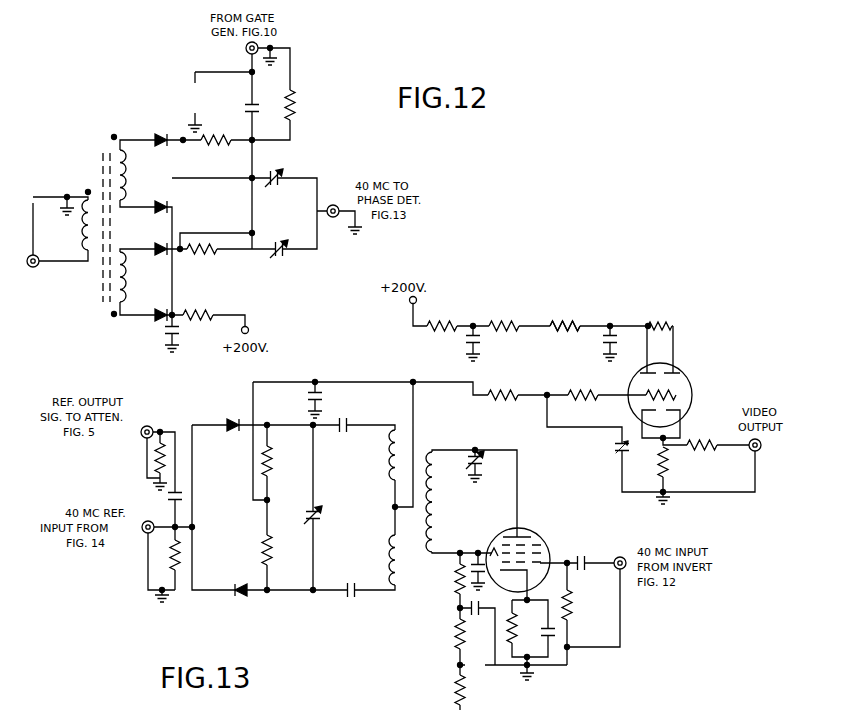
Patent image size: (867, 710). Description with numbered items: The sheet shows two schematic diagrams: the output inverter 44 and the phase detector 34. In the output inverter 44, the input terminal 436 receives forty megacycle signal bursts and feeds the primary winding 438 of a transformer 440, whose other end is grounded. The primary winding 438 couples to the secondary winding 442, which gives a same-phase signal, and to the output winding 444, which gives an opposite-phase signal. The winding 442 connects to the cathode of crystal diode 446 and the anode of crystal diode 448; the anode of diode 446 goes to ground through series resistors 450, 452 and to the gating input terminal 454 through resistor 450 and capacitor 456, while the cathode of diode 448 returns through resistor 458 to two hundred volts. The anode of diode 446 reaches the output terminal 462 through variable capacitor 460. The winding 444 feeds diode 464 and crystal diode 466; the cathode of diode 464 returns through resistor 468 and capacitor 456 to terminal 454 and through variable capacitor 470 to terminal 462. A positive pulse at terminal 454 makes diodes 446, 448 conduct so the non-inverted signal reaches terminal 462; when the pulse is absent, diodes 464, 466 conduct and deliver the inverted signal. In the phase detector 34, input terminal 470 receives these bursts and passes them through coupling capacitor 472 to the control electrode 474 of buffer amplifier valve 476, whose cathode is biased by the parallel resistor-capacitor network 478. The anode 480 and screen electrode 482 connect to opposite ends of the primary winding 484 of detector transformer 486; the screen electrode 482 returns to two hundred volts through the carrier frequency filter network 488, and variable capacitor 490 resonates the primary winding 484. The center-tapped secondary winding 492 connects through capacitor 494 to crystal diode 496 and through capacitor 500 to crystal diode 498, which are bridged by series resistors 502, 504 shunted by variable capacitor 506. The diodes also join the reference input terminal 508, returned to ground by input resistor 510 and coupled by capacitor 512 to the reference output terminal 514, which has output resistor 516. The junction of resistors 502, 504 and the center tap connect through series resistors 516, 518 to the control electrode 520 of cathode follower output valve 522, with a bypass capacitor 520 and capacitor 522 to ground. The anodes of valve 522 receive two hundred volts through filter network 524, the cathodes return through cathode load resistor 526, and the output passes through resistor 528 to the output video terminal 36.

In FIG. 12, the output inverter 44 is at (128, 104).
In FIG. 12, the transformer 440 is at (97, 171).
In FIG. 12, the primary winding 438 is at (84, 226).
In FIG. 12, the input terminal 436 is at (37, 268).
In FIG. 12, the secondary winding 444 is at (128, 176).
In FIG. 12, the secondary winding 442 is at (128, 278).
In FIG. 12, the diode 464 is at (161, 132).
In FIG. 12, the crystal diode 466 is at (169, 205).
In FIG. 12, the crystal diode 446 is at (157, 243).
In FIG. 12, the crystal diode 448 is at (168, 328).
In FIG. 12, the input terminal 454 is at (246, 48).
In FIG. 12, the capacitor 456 is at (256, 104).
In FIG. 12, the resistor 452 is at (293, 100).
In FIG. 12, the resistor 468 is at (206, 135).
In FIG. 12, the resistor 450 is at (196, 254).
In FIG. 12, the resistor 458 is at (200, 312).
In FIG. 12, the variable capacitor 470 is at (280, 187).
In FIG. 13, the variable capacitor 470 is at (618, 558).
In FIG. 12, the variable capacitor 460 is at (286, 258).
In FIG. 12, the output terminal 462 is at (333, 203).
In FIG. 13, the phase detector 34 is at (397, 365).
In FIG. 13, the detector transformer 486 is at (424, 620).
In FIG. 13, the reference output terminal 514 is at (140, 438).
In FIG. 13, the resistor 516 is at (176, 430).
In FIG. 13, the capacitor 512 is at (168, 501).
In FIG. 13, the input terminal 508 is at (143, 538).
In FIG. 13, the input resistor 510 is at (176, 580).
In FIG. 13, the crystal diode 498 is at (242, 598).
In FIG. 13, the crystal diode 496 is at (233, 417).
In FIG. 13, the control electrode 520 is at (306, 401).
In FIG. 13, the resistor 502 is at (271, 460).
In FIG. 13, the resistor 504 is at (272, 546).
In FIG. 13, the variable capacitor 506 is at (326, 519).
In FIG. 13, the capacitor 494 is at (352, 421).
In FIG. 13, the center-tapped secondary winding 492 is at (386, 470).
In FIG. 13, the capacitor 500 is at (355, 598).
In FIG. 13, the carrier frequency filter network 488 is at (456, 650).
In FIG. 13, the parallel resistor-capacitor network 478 is at (506, 612).
In FIG. 13, the primary winding 484 is at (440, 506).
In FIG. 13, the variable capacitor 490 is at (479, 463).
In FIG. 13, the buffer amplifier valve 476 is at (537, 530).
In FIG. 13, the anode 480 is at (513, 532).
In FIG. 13, the screen electrode 482 is at (497, 548).
In FIG. 13, the coupling capacitor 472 is at (582, 556).
In FIG. 13, the control electrode 474 is at (550, 574).
In FIG. 13, the 40 megacycle filter network 524 is at (583, 324).
In FIG. 13, the resistor 518 is at (590, 387).
In FIG. 13, the cathode follower output valve 522 is at (694, 392).
In FIG. 13, the resistor 528 is at (705, 440).
In FIG. 13, the output video terminal 36 is at (762, 447).
In FIG. 13, the cathode load resistor 526 is at (670, 468).